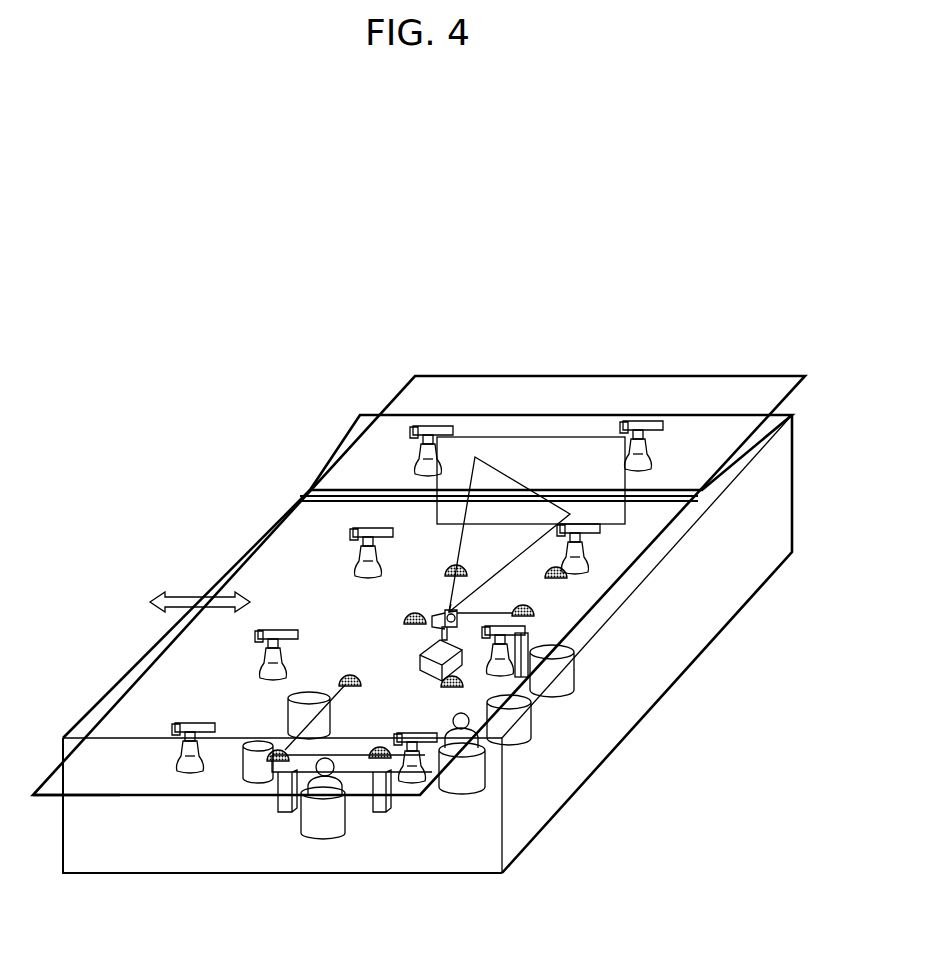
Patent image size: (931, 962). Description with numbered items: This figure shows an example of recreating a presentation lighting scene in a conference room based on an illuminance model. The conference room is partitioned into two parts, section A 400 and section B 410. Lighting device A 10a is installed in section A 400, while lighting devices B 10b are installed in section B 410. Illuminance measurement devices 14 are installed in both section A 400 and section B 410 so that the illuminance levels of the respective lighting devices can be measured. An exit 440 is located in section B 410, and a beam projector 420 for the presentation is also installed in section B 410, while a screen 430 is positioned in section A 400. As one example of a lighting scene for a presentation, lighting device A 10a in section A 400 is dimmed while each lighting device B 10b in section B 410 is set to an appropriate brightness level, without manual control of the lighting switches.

The section A 400 is at (584, 376).
The section B 410 is at (40, 797).
The beam projector 420 is at (418, 643).
The screen 430 is at (625, 515).
The exit 440 is at (236, 589).
The lighting device A 10a is at (625, 425).
The lighting device B 10b is at (198, 722).
The illuminance measurement device 14 is at (270, 750).